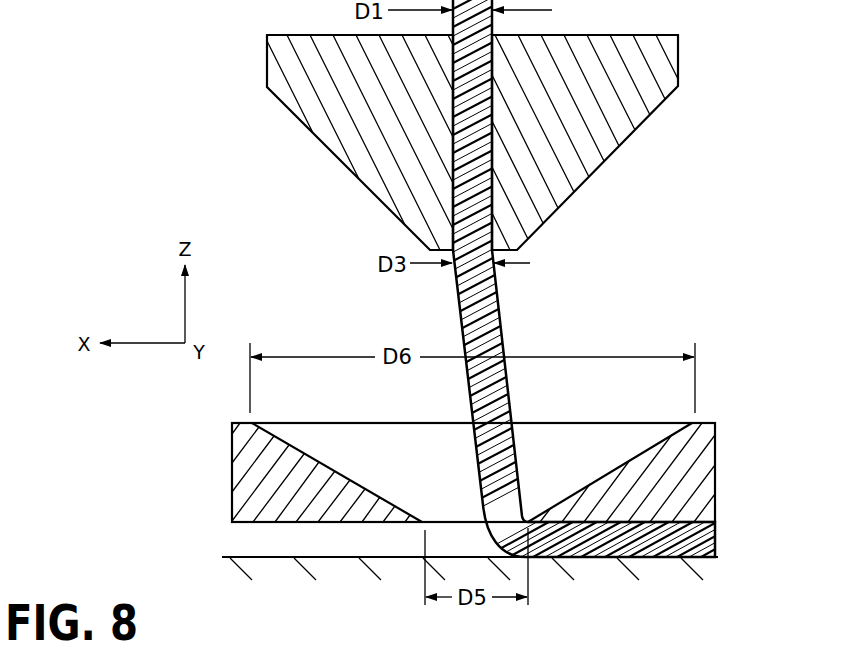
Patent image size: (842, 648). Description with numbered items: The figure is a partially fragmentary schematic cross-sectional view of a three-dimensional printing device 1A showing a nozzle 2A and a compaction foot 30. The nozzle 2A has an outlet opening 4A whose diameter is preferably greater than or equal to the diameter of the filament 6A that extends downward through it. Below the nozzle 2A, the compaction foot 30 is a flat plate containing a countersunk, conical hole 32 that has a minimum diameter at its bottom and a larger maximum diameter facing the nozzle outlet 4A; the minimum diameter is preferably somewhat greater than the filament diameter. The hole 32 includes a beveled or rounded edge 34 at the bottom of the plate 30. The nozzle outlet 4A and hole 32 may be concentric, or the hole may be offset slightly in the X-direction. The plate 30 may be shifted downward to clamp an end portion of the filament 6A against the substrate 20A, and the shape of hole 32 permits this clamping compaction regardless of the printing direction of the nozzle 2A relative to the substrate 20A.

The 3D printing device 1A is at (643, 236).
The nozzle 2A is at (374, 203).
The outlet opening 4A is at (460, 272).
The filament 6A is at (507, 341).
The substrate 20A is at (247, 552).
The compaction foot 30 is at (228, 459).
The hole 32 is at (591, 438).
The beveled or rounded edge 34 is at (422, 525).